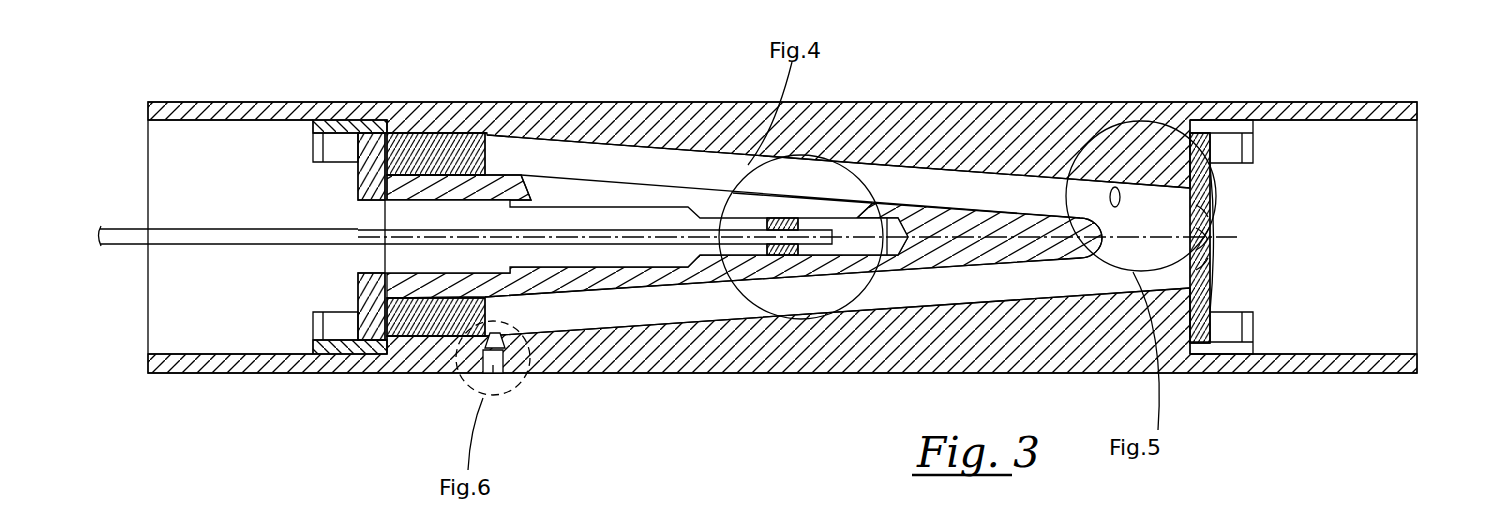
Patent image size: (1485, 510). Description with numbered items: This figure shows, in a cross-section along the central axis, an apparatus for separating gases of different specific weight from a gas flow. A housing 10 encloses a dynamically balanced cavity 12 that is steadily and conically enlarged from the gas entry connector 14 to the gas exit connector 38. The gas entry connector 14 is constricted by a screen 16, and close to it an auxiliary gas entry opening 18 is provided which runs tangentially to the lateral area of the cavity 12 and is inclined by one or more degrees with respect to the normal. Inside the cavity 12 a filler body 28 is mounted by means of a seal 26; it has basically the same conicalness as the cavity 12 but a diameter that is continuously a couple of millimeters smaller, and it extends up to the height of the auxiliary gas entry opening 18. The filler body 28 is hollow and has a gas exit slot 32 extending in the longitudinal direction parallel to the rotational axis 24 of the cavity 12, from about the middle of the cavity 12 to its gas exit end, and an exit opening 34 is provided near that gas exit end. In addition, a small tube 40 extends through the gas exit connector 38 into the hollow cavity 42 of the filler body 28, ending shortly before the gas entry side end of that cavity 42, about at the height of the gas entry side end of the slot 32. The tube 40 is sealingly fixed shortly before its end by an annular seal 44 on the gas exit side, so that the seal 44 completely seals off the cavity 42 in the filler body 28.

The housing 10 is at (905, 135).
The cavity 12 is at (998, 195).
The gas entry connector 14 is at (1217, 245).
The screen 16 is at (1212, 188).
The auxiliary gas entry opening 18 is at (1117, 185).
The rotational axis 24 is at (1217, 237).
The seal 26 is at (408, 322).
The filler body 28 is at (490, 182).
The gas exit slot 32 is at (678, 198).
The exit opening 34 is at (495, 372).
The gas exit connector 38 is at (368, 215).
The small tube 40 is at (172, 240).
The hollow cavity of the filler body 42 is at (652, 260).
The annular seal 44 is at (783, 255).